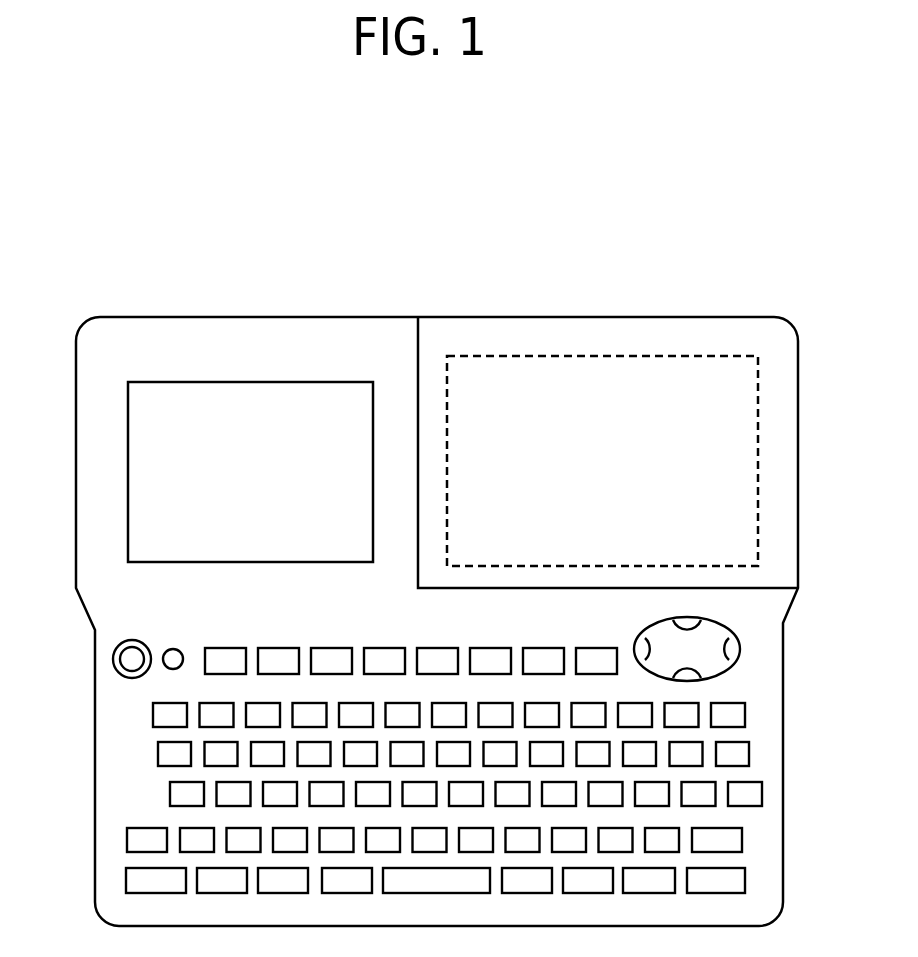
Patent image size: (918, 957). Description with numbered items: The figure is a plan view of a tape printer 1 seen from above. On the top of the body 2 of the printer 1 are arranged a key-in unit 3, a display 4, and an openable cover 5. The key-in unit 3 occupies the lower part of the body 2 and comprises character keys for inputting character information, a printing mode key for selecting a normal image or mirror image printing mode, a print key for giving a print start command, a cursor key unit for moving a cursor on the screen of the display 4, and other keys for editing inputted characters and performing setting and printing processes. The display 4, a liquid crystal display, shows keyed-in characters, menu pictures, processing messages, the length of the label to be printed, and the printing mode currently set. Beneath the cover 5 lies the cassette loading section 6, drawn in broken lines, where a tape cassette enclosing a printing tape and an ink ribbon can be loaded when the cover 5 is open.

The printer 1 is at (421, 288).
The body 2 is at (102, 573).
The key-in unit 3 is at (755, 716).
The display 4 is at (143, 451).
The openable cover 5 is at (740, 434).
The cassette loading section 6 is at (576, 361).